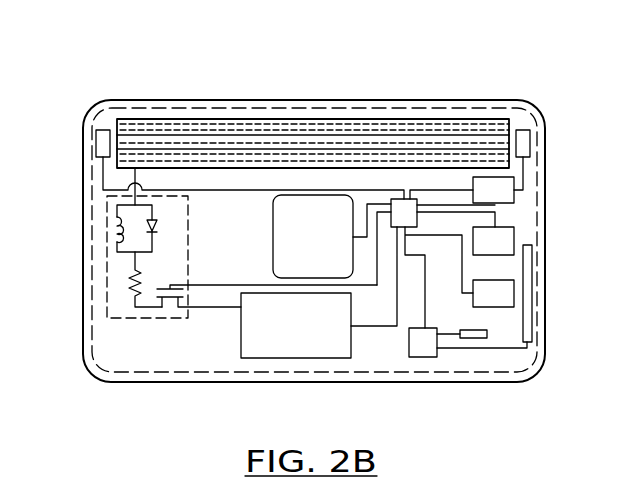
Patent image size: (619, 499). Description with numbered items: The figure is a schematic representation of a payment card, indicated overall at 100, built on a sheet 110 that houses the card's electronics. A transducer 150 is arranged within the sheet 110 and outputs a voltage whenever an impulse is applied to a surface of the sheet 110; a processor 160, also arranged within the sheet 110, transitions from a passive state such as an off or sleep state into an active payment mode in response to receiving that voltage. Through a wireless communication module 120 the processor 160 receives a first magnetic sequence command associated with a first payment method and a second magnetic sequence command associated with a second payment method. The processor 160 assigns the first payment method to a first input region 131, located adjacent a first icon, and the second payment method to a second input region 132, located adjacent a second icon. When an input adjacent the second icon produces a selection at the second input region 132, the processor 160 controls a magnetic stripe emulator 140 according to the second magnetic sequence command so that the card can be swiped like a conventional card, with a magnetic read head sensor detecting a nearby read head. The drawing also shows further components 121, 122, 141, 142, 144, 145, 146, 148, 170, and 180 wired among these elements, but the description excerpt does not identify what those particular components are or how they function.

The electronic device 100 is at (112, 76).
The sheet 110 is at (216, 106).
The wireless communication module 120 is at (422, 346).
The memory 121 is at (472, 336).
The connector 122 is at (527, 286).
The first input region 131 is at (500, 195).
The second input region 132 is at (502, 236).
The magnetic stripe emulator 140 is at (162, 125).
The first battery terminal 141 is at (118, 126).
The charging circuit 142 is at (119, 269).
The switching transistor 144 is at (170, 309).
The resistor 145 is at (130, 288).
The inductor-diode circuit 146 is at (150, 224).
The second battery terminal 148 is at (524, 146).
The transducer 150 is at (305, 208).
The processor 160 is at (410, 205).
The display module 170 is at (320, 346).
The circuit board 180 is at (510, 350).